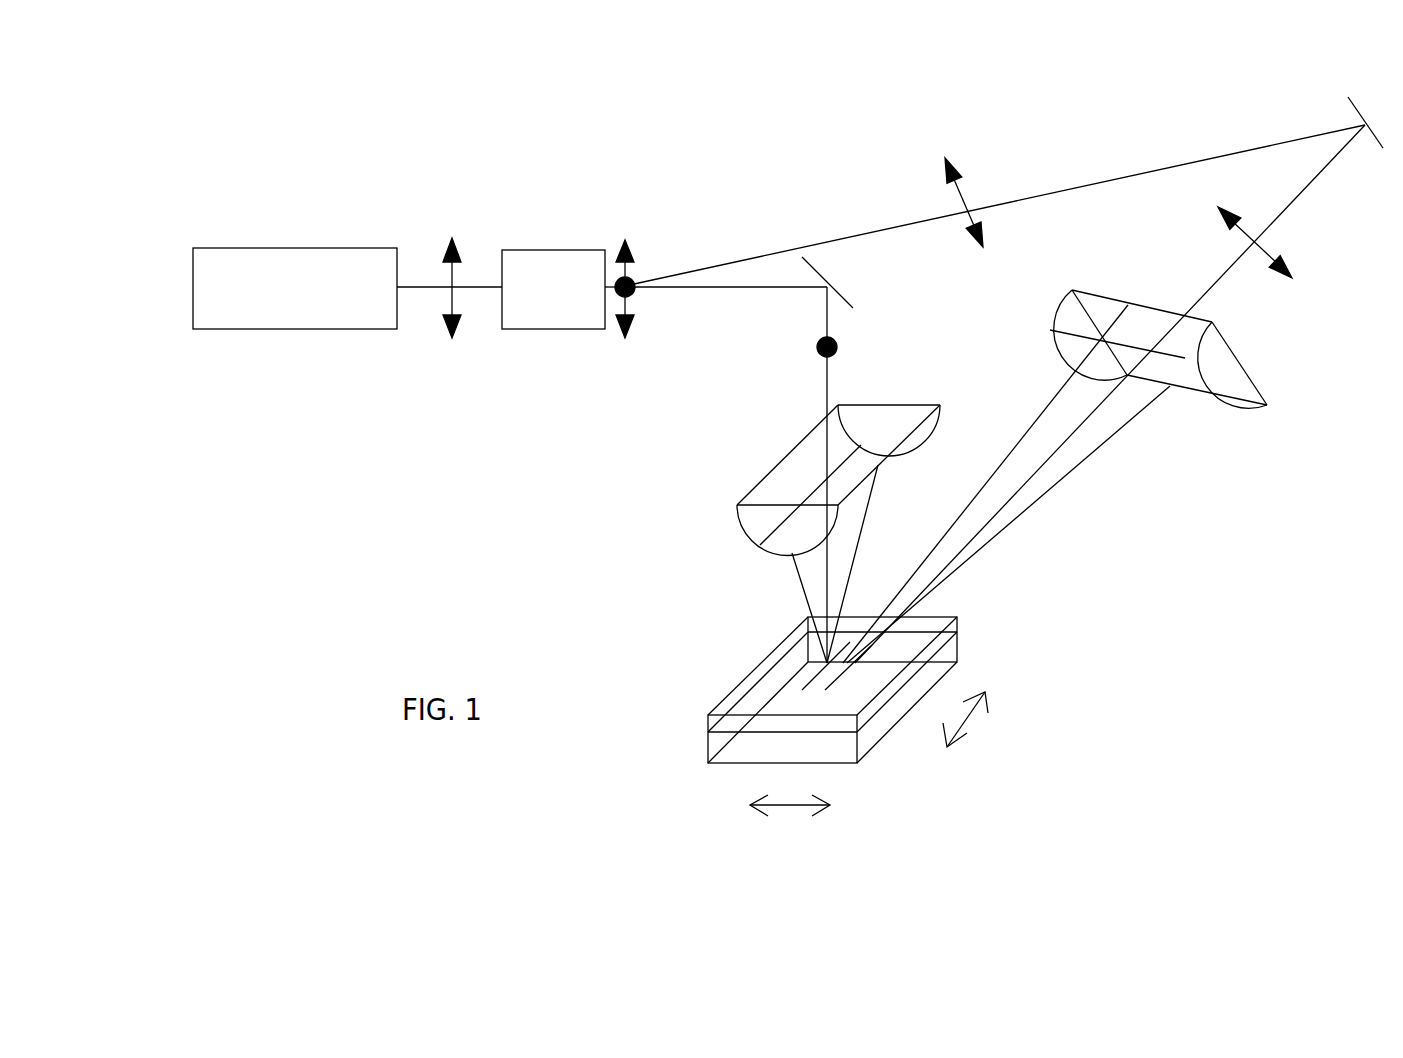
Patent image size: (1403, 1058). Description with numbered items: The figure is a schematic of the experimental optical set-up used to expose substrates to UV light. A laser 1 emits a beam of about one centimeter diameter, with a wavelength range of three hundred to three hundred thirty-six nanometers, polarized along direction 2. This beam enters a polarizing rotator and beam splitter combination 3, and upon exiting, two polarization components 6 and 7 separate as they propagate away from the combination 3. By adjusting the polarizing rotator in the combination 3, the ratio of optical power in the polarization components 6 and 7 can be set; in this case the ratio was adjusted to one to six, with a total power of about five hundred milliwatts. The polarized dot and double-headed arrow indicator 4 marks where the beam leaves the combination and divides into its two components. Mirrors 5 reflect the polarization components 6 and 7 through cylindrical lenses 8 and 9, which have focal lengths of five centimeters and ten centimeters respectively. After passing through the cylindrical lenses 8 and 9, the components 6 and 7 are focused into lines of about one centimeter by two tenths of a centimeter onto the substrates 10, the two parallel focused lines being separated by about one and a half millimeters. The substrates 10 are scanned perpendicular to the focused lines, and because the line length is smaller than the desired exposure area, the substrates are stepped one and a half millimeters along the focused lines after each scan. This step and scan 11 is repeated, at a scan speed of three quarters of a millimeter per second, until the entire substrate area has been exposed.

The laser 1 is at (252, 313).
The polarization direction 2 is at (450, 337).
The polarizing rotator and beam splitter combination 3 is at (557, 317).
The polarizing beam splitter 4 is at (628, 337).
The mirrors 5 is at (815, 265).
The polarization component 6 is at (983, 253).
The polarization component 7 is at (817, 347).
The cylindrical lens 8 is at (1220, 400).
The cylindrical lens 9 is at (740, 520).
The substrates 10 is at (952, 617).
The step and scan 11 is at (937, 757).